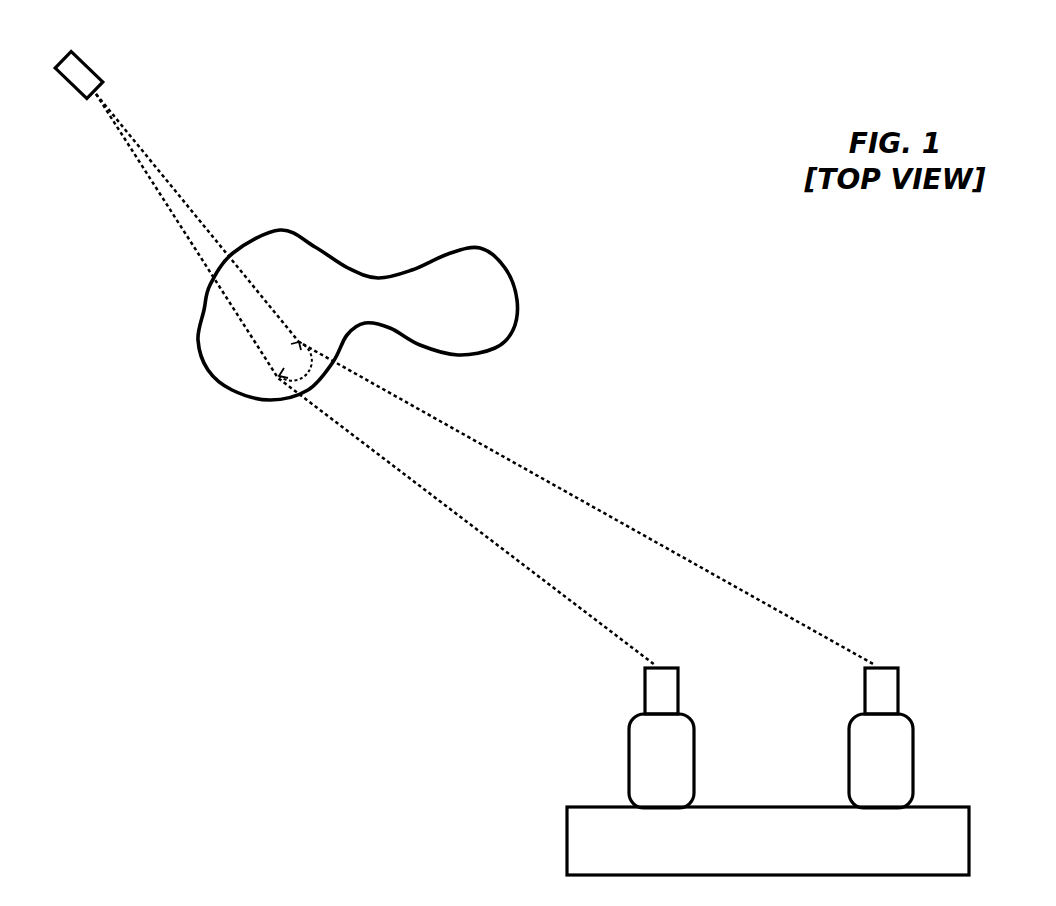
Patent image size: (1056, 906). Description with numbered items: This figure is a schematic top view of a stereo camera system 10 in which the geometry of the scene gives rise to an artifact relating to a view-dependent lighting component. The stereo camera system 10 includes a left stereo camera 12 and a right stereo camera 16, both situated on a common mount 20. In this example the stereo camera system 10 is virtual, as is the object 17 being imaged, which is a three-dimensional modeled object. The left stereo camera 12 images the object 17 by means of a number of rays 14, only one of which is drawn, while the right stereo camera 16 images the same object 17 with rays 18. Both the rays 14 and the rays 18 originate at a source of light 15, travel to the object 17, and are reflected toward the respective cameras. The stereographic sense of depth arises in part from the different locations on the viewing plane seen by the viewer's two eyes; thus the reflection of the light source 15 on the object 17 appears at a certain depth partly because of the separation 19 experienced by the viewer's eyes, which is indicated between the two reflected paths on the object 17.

The stereo camera system 10 is at (484, 610).
The left stereo camera 12 is at (683, 718).
The rays 14 is at (565, 595).
The source of light 15 is at (87, 62).
The right stereo camera 16 is at (908, 718).
The object 17 is at (495, 255).
The rays 18 is at (725, 580).
The separation 19 is at (310, 357).
The mount 20 is at (957, 807).